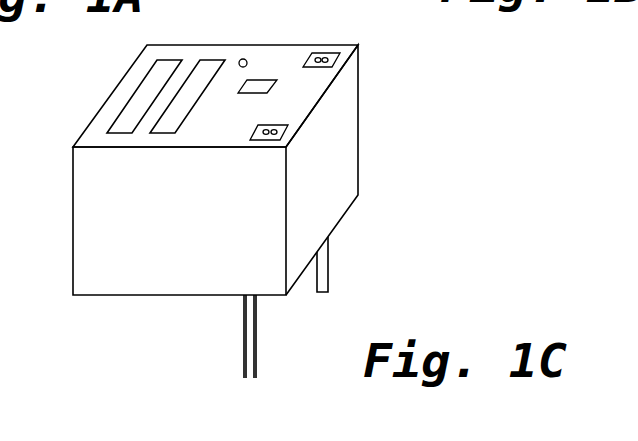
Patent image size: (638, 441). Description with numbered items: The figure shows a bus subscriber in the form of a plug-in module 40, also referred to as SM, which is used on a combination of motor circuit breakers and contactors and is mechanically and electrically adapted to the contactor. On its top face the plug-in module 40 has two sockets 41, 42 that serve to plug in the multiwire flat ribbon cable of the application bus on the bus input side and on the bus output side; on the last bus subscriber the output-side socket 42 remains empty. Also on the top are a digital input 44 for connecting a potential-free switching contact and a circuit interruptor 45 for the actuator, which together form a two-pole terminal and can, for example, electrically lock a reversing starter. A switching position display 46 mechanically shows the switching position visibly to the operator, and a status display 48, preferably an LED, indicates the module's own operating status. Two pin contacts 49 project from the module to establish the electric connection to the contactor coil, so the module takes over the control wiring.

The plug-in module 40 is at (331, 188).
The socket 41 is at (142, 93).
The socket 42 is at (202, 64).
The digital input 44 is at (343, 47).
The circuit interruptor 45 is at (285, 128).
The switching position display 46 is at (272, 82).
The status display 48 is at (247, 61).
The pin contacts 49 is at (322, 283).